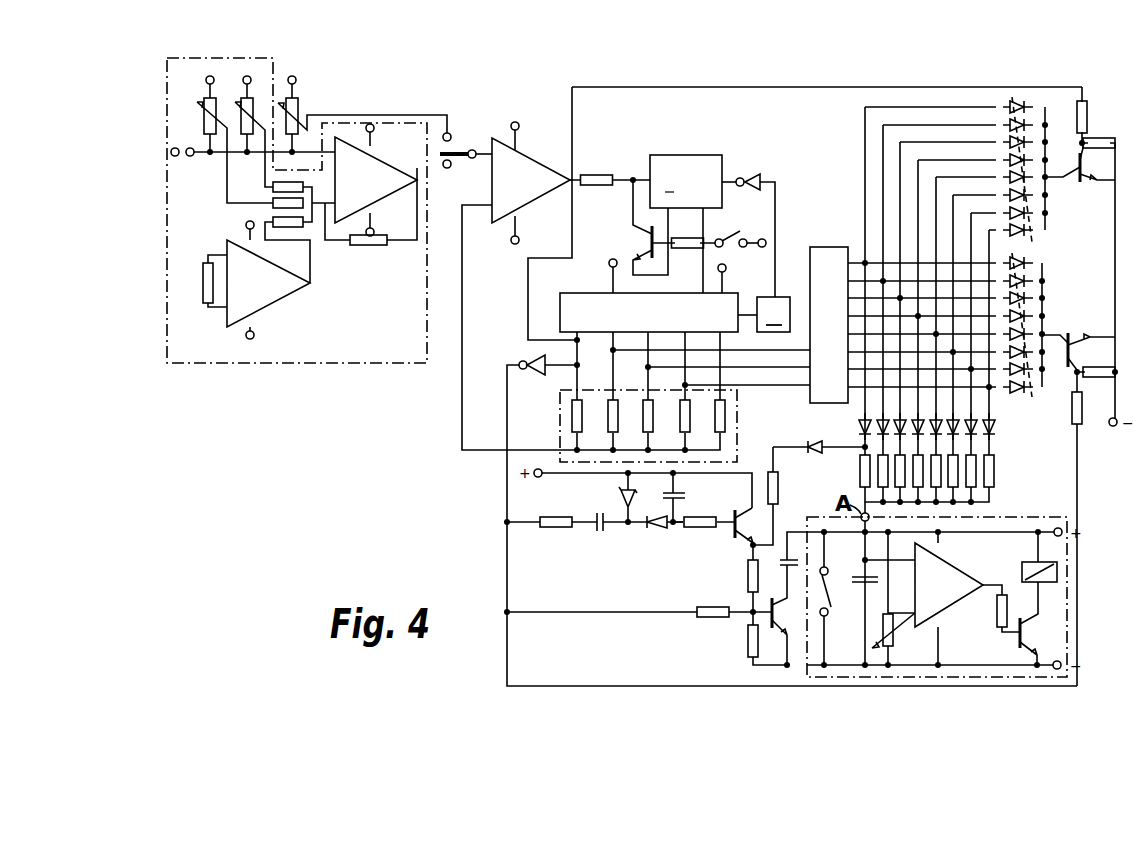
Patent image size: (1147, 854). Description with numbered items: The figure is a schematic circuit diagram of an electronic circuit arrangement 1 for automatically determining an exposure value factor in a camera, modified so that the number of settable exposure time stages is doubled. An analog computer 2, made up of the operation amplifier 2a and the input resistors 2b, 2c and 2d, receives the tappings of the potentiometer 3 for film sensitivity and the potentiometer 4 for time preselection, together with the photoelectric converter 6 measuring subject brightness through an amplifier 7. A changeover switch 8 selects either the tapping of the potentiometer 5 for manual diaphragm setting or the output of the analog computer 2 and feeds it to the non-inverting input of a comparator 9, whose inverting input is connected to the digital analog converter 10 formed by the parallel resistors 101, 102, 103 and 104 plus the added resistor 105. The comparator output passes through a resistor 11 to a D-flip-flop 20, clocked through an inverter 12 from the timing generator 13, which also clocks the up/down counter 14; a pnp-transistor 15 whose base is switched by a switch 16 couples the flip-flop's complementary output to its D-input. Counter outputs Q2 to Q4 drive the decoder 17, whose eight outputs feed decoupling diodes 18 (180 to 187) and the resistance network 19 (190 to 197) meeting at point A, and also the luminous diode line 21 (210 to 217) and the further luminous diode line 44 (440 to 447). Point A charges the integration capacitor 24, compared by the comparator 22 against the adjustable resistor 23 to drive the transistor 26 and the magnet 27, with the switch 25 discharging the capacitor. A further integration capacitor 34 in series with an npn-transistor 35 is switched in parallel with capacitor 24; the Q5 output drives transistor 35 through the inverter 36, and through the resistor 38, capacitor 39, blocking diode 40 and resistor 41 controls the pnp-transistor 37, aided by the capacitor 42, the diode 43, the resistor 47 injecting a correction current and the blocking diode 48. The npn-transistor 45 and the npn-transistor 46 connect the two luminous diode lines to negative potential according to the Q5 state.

The electronic circuit arrangement 1 is at (312, 358).
The analog computer 2 is at (315, 235).
The operation amplifier 2a is at (369, 190).
The input resistor 2b is at (274, 190).
The input resistor 2c is at (272, 205).
The input resistor 2d is at (290, 229).
The potentiometer 3 is at (203, 98).
The potentiometer 4 is at (240, 100).
The potentiometer 5 is at (296, 104).
The photoelectric converter 6 is at (204, 285).
The amplifier 7 is at (262, 294).
The changeover switch 8 is at (452, 152).
The comparator 9 is at (529, 160).
The digital analog converter 10 is at (657, 426).
The resistor 11 is at (597, 175).
The inverter 12 is at (750, 176).
The timing generator 13 is at (764, 314).
The up/down counter 14 is at (668, 302).
The pnp-transistor 15 is at (646, 242).
The switch 16 is at (726, 238).
The decoder 17 is at (828, 247).
The decoupling diodes 18 is at (929, 438).
The resistance network 19 is at (928, 479).
The D-flip-flop 20 is at (676, 155).
The luminous diode line 21 is at (1046, 331).
The comparator 22 is at (953, 598).
The adjustable resistor 23 is at (892, 630).
The integration capacitor 24 is at (838, 595).
The switch 25 is at (820, 592).
The transistor 26 is at (1024, 632).
The magnet 27 is at (1026, 566).
The integration capacitor 34 is at (759, 575).
The npn-transistor 35 is at (759, 636).
The inverter 36 is at (525, 360).
The pnp-transistor 37 is at (732, 531).
The resistor 38 is at (561, 531).
The capacitor 39 is at (603, 537).
The blocking diode 40 is at (656, 530).
The resistor 41 is at (702, 531).
The capacitor 42 is at (686, 493).
The zener diode 43 is at (621, 493).
The luminous diode line 44 is at (1050, 152).
The npn-transistor 45 is at (1068, 352).
The npn-transistor 46 is at (1076, 172).
The resistor 47 is at (778, 485).
The blocking diode 48 is at (810, 452).
The resistor 101 is at (714, 425).
The resistor 102 is at (679, 425).
The resistor 103 is at (642, 425).
The resistor 104 is at (607, 425).
The resistor 105 is at (571, 425).
The decoupling diode 180 is at (993, 428).
The decoupling diode 187 is at (857, 428).
The resistor 190 is at (994, 474).
The resistor 197 is at (858, 474).
The luminous diode 210 is at (1018, 392).
The luminous diode 217 is at (1014, 265).
The luminous diode 440 is at (1030, 230).
The luminous diode 447 is at (1022, 102).